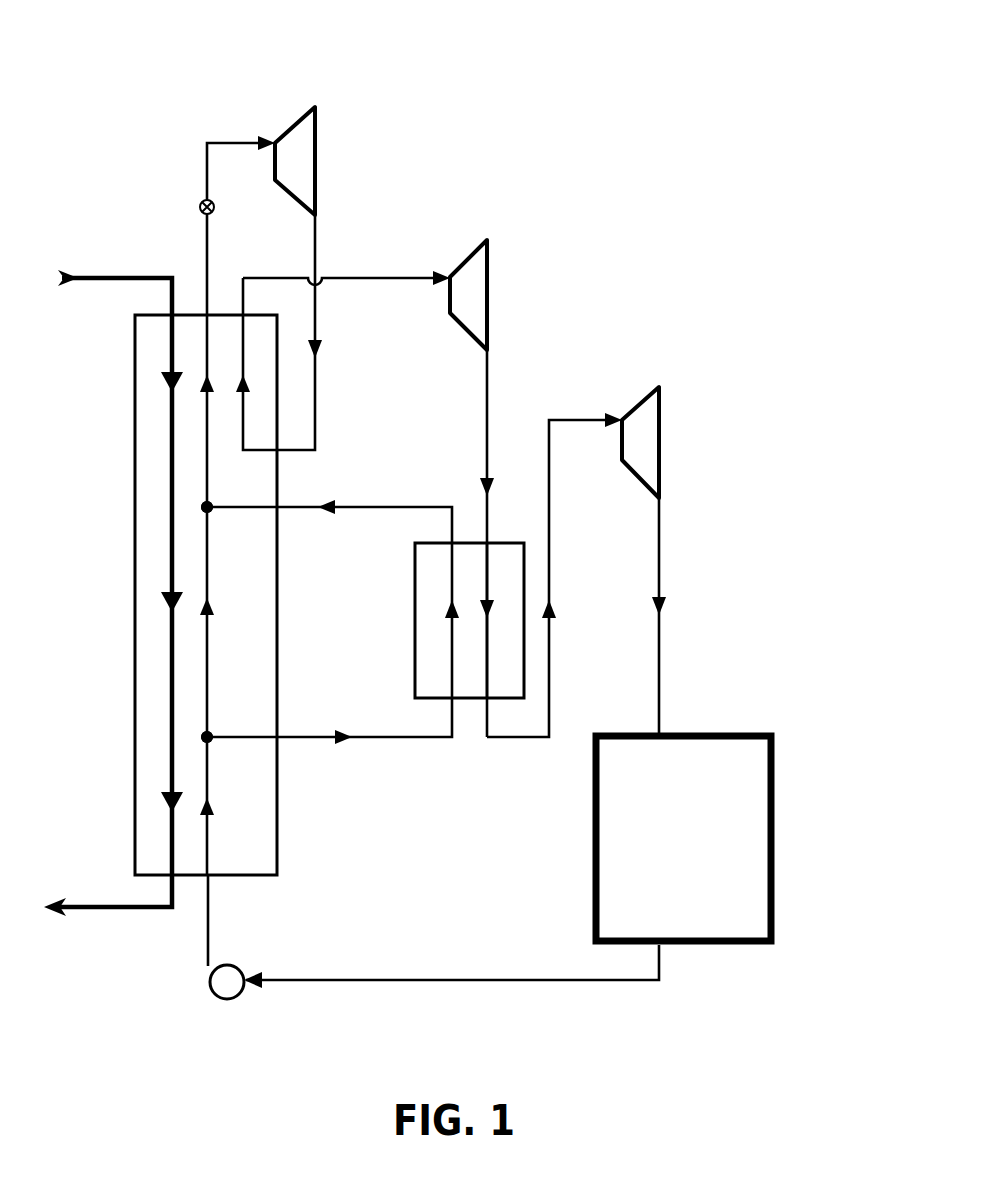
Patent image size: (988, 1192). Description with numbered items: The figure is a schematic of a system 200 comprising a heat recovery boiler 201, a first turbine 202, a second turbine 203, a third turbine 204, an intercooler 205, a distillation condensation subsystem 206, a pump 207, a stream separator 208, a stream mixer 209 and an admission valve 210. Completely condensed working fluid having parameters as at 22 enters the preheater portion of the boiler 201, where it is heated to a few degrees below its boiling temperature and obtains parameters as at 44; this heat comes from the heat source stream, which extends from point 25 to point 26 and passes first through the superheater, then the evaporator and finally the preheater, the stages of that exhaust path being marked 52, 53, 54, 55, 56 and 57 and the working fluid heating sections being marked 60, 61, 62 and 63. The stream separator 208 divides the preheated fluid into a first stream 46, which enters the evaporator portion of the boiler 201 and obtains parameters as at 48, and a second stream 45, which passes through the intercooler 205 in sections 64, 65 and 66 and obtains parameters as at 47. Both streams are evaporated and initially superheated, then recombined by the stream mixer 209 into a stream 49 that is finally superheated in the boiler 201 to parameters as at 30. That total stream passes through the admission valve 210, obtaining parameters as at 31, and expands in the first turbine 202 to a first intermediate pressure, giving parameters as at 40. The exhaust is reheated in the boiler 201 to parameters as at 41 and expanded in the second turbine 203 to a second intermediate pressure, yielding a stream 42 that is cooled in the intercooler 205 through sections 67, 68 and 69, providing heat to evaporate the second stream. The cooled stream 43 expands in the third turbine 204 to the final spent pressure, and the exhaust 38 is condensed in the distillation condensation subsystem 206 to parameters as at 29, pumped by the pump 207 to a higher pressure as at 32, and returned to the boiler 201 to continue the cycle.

The system 200 is at (148, 82).
The boiler 201 is at (133, 601).
The first turbine 202 is at (315, 163).
The second turbine 203 is at (487, 292).
The third turbine 204 is at (659, 458).
The intercooler 205 is at (414, 611).
The distillation condensation subsystem 206 is at (775, 830).
The pump 207 is at (233, 1000).
The stream separator 208 is at (212, 745).
The stream mixer 209 is at (212, 503).
The admission valve 210 is at (199, 207).
The completely condensed working fluid 22 is at (222, 920).
The heat source stream start point 25 is at (115, 284).
The heat source stream end point 26 is at (108, 932).
The condensed working fluid 29 is at (579, 966).
The superheated working fluid 30 is at (227, 225).
The working fluid after admission valve 31 is at (266, 130).
The pumped working fluid 32 is at (379, 985).
The third turbine exhaust 38 is at (670, 617).
The first turbine exhaust 40 is at (289, 341).
The reheated working fluid 41 is at (345, 268).
The second turbine exhaust 42 is at (497, 543).
The intercooler outlet stream 43 is at (554, 577).
The preheated working fluid 44 is at (218, 745).
The second working fluid stream 45 is at (329, 728).
The first working fluid stream 46 is at (221, 718).
The intercooler-heated stream 47 is at (329, 515).
The evaporator-heated stream 48 is at (218, 517).
The recombined working fluid stream 49 is at (221, 488).
The exhaust gas section 52 is at (163, 387).
The exhaust gas section 53 is at (157, 485).
The exhaust gas section 54 is at (163, 580).
The exhaust gas section 55 is at (157, 642).
The exhaust gas section 56 is at (157, 690).
The exhaust gas section 57 is at (163, 795).
The working solution heating section 60 is at (217, 776).
The working solution heating section 61 is at (217, 649).
The working solution heating section 62 is at (220, 558).
The working solution heating section 63 is at (217, 392).
The recuperator heating section 64 is at (436, 679).
The recuperator heating section 65 is at (439, 630).
The recuperator heating section 66 is at (436, 571).
The recuperator cooling section 67 is at (500, 571).
The recuperator cooling section 68 is at (500, 630).
The recuperator cooling section 69 is at (500, 679).